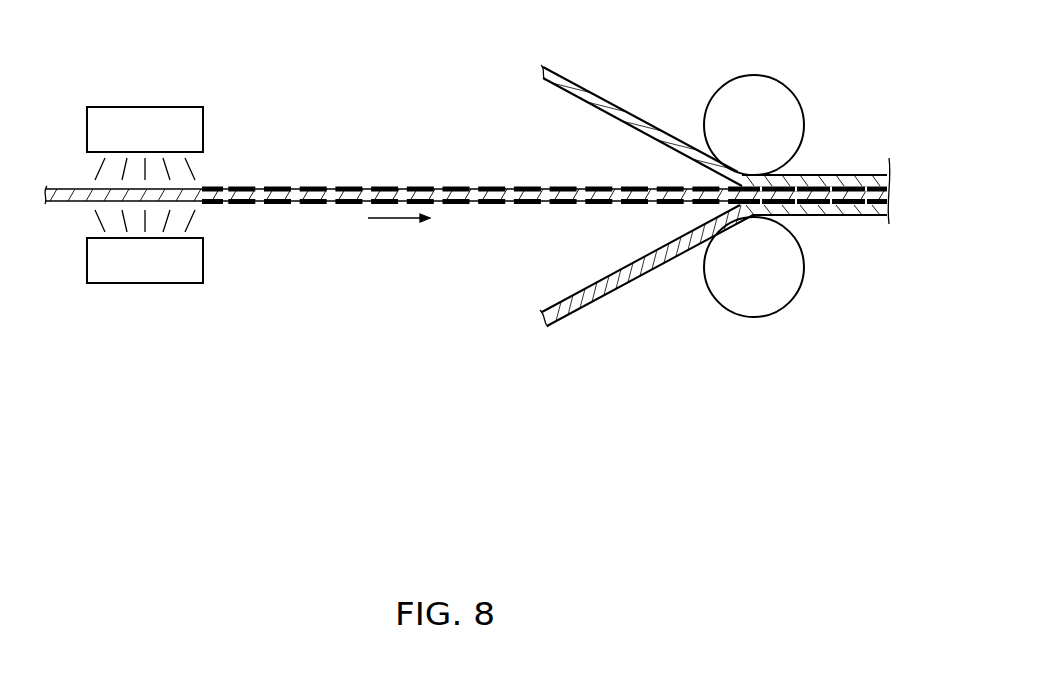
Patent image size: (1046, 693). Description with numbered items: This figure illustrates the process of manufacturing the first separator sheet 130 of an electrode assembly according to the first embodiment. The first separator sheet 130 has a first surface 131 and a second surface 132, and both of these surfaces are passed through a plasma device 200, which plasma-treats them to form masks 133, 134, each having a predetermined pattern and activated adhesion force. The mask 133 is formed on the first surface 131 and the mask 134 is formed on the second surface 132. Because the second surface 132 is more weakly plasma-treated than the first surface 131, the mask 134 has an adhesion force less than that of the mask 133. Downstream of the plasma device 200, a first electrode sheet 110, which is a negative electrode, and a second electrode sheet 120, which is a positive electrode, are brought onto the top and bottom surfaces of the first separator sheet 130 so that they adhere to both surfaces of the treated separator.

The first electrode sheet 110 is at (622, 109).
The second electrode sheet 120 is at (620, 277).
The first separator sheet 130 is at (460, 196).
The first surface 131 is at (62, 188).
The second surface 132 is at (62, 203).
The mask 133 is at (383, 186).
The mask 134 is at (347, 205).
The plasma device 200 is at (203, 259).